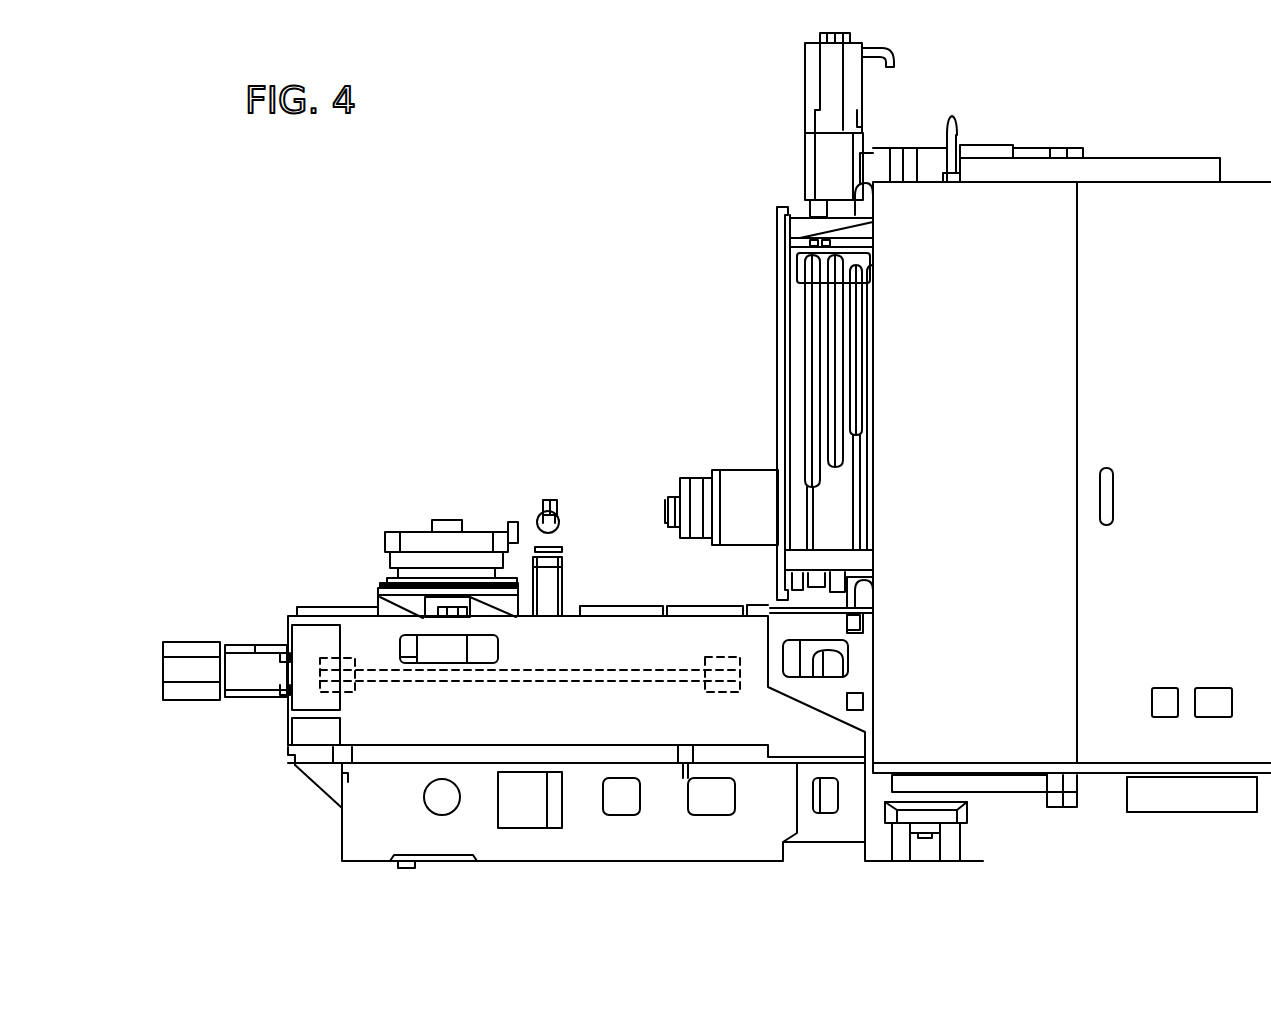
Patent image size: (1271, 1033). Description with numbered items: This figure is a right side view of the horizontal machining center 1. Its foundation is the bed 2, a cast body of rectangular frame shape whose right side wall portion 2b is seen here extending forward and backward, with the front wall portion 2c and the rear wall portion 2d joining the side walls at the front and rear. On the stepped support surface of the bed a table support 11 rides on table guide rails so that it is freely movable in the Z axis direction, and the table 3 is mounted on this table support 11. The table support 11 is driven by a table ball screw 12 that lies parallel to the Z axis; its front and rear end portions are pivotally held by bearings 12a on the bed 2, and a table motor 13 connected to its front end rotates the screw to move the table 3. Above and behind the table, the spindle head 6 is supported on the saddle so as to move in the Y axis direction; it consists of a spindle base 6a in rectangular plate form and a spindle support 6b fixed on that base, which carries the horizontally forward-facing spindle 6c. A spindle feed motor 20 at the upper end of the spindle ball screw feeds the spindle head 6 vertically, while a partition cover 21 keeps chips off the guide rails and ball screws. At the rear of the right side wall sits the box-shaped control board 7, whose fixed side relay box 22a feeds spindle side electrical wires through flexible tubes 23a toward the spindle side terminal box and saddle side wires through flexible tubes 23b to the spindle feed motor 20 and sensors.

The horizontal machining center 1 is at (575, 185).
The bed 2 is at (585, 865).
The right side wall portion 2b is at (506, 850).
The front wall portion 2c is at (288, 756).
The rear wall portion 2d is at (988, 812).
The table 3 is at (410, 536).
The spindle head 6 is at (683, 466).
The spindle base 6a is at (825, 518).
The spindle support 6b is at (735, 470).
The spindle 6c is at (668, 505).
The control board 7 is at (1103, 745).
The table support 11 is at (385, 598).
The table ball screw 12 is at (628, 662).
The bearing 12a is at (350, 612).
The table motor 13 is at (203, 643).
The spindle feed motor 20 is at (805, 73).
The partition cover 21 is at (770, 318).
The fixed side relay box 22a is at (866, 262).
The flexible tube 23a is at (808, 356).
The flexible tube 23b is at (855, 335).